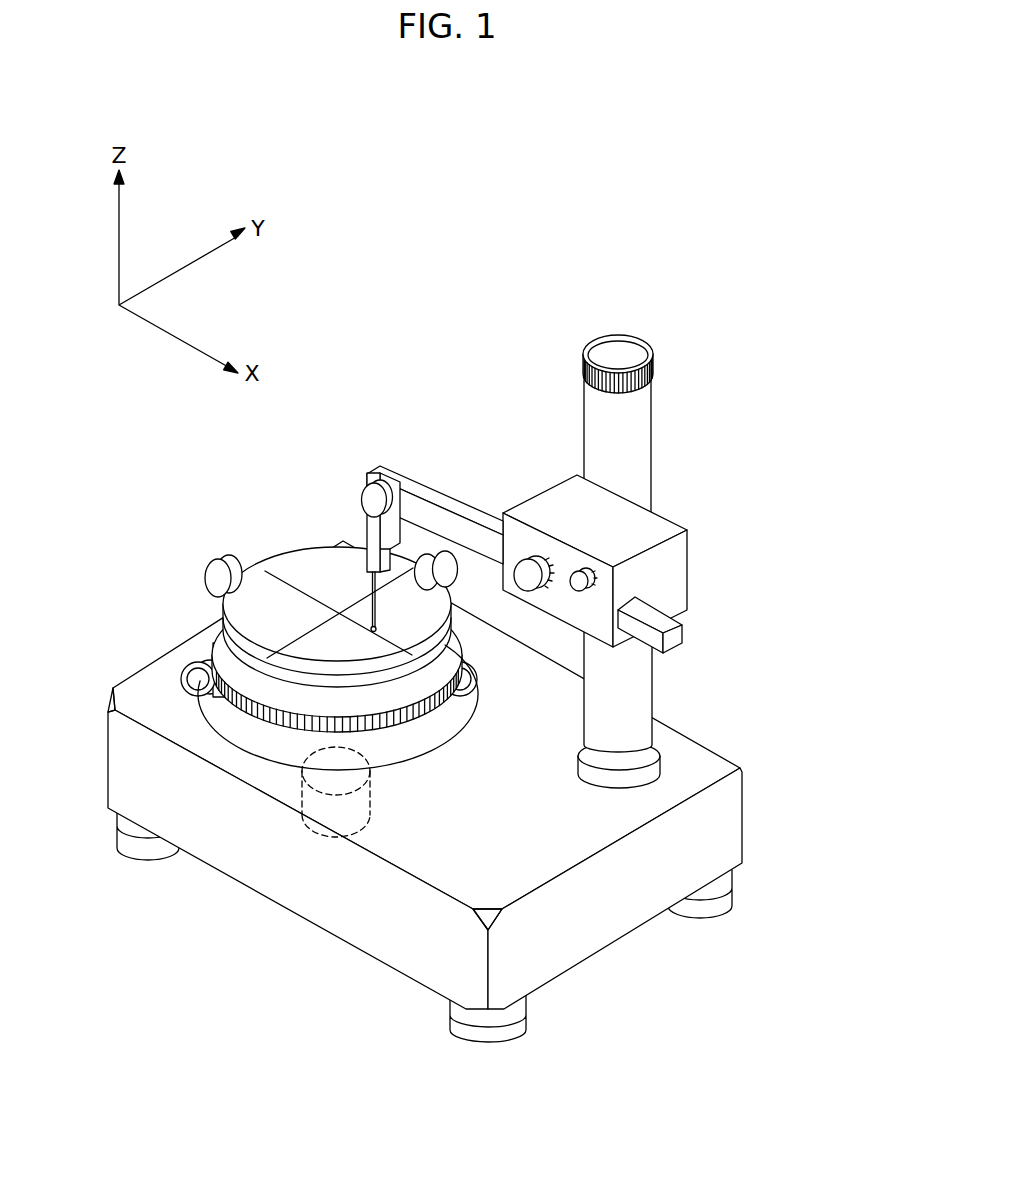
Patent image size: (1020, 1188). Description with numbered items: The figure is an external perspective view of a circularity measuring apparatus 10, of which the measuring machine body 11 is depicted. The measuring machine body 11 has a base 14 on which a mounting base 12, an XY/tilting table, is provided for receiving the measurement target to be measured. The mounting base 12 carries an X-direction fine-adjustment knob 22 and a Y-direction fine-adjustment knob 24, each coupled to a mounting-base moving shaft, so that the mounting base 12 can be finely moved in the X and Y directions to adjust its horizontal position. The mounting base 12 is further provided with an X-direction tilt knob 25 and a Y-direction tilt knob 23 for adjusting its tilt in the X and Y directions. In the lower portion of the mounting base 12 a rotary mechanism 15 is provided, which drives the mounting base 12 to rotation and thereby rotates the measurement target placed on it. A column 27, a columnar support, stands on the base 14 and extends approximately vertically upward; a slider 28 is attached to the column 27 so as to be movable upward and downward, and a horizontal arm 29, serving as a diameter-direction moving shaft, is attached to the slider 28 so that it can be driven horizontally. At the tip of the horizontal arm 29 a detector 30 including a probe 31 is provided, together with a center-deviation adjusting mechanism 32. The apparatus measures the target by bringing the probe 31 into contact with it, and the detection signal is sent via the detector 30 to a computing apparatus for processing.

The circularity measuring apparatus 10 is at (735, 276).
The measuring machine body 11 is at (505, 357).
The mounting base (XY/tilting table) 12 is at (263, 628).
The base 14 is at (573, 944).
The rotary mechanism 15 is at (330, 815).
The X-direction fine-adjustment knob 22 is at (460, 692).
The Y-direction tilt knob 23 is at (455, 555).
The Y-direction fine-adjustment knob 24 is at (180, 686).
The X-direction tilt knob 25 is at (220, 576).
The column (columnar support) 27 is at (636, 460).
The slider 28 is at (671, 573).
The horizontal arm (diameter-direction moving shaft) 29 is at (675, 616).
The detector 30 is at (363, 527).
The probe 31 is at (372, 630).
The center-deviation adjusting mechanism 32 is at (393, 479).